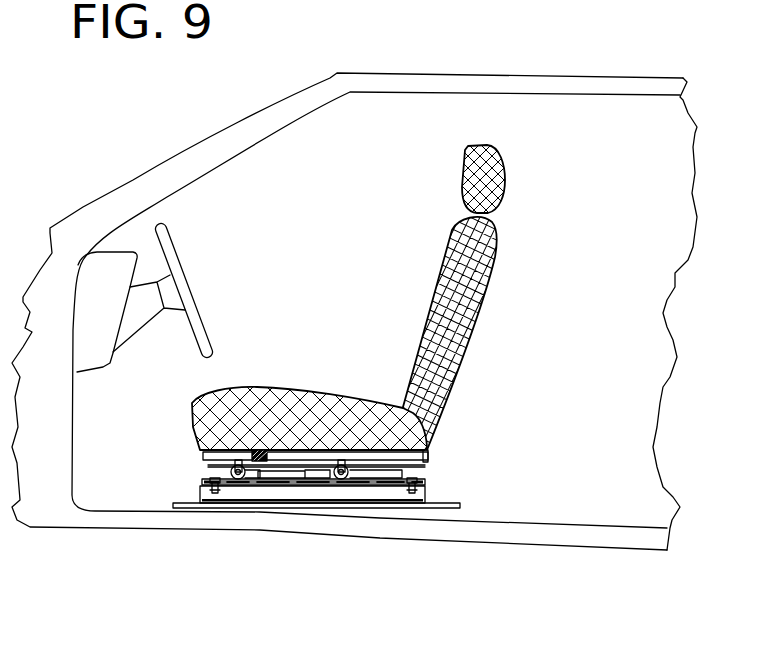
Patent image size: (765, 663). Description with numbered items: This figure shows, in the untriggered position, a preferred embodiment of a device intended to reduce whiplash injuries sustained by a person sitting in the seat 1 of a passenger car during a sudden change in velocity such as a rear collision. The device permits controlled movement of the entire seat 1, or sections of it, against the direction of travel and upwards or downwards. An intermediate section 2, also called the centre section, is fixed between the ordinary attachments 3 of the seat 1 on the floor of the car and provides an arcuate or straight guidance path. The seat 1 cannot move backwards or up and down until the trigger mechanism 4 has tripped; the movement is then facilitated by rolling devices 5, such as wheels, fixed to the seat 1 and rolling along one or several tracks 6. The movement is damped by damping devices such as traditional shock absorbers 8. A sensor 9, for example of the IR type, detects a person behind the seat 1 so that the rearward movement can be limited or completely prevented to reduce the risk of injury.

The seat 1 is at (437, 190).
The intermediate section 2 is at (402, 472).
The ordinary attachments 3 is at (295, 493).
The trigger mechanism 4 is at (255, 477).
The rolling device 5 is at (345, 492).
The tracks 6 is at (392, 494).
The shock absorbers 8 is at (277, 474).
The sensor 9 is at (428, 463).